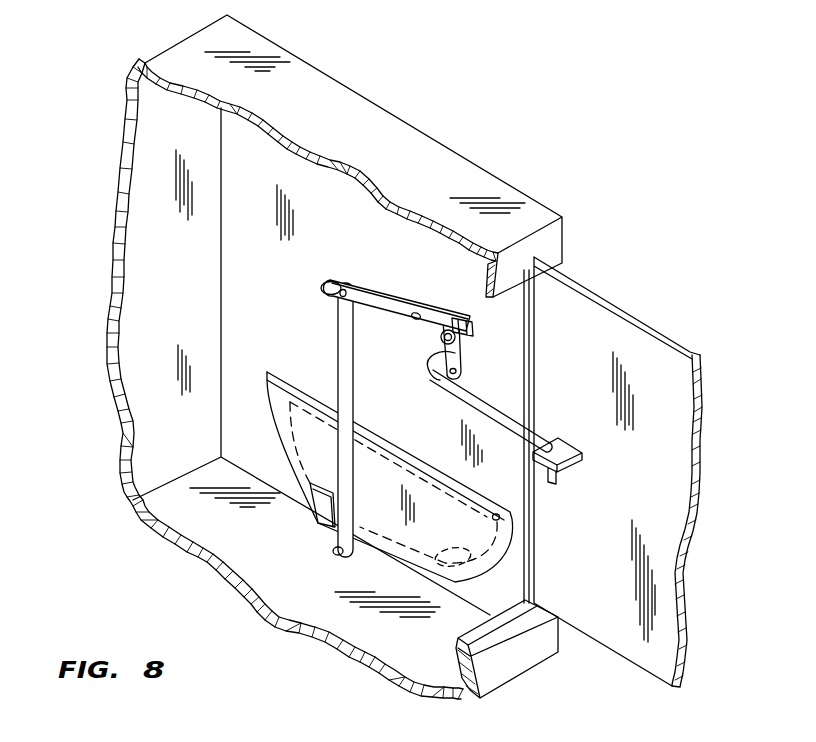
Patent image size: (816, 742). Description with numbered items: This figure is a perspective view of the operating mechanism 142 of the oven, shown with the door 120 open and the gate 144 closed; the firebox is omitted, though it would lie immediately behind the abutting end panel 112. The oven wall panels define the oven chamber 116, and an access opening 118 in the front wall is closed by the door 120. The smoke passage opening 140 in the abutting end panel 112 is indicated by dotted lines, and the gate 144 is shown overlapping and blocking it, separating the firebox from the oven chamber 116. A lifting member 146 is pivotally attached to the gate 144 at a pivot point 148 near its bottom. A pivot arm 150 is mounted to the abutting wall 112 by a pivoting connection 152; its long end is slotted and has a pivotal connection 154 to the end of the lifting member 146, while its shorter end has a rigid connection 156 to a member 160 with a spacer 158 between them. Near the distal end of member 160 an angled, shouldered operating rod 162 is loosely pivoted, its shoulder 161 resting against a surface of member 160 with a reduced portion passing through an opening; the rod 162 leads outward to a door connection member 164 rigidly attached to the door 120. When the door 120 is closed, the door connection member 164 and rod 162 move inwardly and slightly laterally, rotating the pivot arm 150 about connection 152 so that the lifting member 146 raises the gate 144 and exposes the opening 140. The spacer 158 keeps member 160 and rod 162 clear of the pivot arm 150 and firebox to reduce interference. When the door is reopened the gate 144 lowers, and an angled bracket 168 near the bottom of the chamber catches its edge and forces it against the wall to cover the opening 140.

The abutting end panel 112 is at (322, 82).
The oven chamber 116 is at (266, 182).
The access opening 118 is at (517, 297).
The door 120 is at (677, 300).
The smoke passage opening 140 is at (473, 572).
The operating mechanism 142 is at (170, 274).
The gate 144 is at (310, 436).
The lifting member 146 is at (355, 402).
The pivot point 148 is at (338, 555).
The pivot arm 150 is at (368, 290).
The pivoting connection 152 is at (411, 320).
The pivotal connection 154 is at (341, 281).
The rigid connection 156 is at (443, 321).
The spacer 158 is at (465, 321).
The member 160 is at (461, 350).
The shoulder 161 is at (462, 373).
The operating rod 162 is at (455, 392).
The door connection member 164 is at (578, 460).
The bracket 168 is at (317, 520).